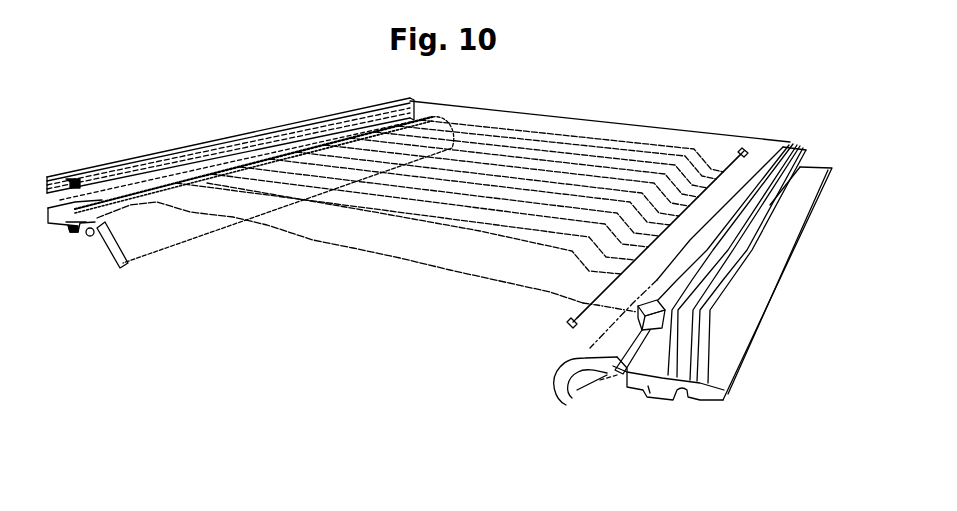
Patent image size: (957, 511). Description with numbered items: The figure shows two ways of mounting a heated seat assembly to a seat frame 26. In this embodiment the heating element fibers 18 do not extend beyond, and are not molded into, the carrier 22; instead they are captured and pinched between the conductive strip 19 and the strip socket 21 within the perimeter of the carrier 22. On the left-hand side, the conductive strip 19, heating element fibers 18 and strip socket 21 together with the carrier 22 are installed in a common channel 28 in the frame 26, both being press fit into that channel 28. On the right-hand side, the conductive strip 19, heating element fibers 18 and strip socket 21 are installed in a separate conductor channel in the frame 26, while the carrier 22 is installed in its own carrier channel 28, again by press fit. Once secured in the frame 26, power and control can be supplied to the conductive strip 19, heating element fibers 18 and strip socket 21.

The heating element fibers 18 is at (395, 227).
The conductive strip 19 is at (395, 227).
The strip socket 21 is at (47, 180).
The carrier 22 is at (138, 158).
The frame 26 is at (189, 252).
The channel 28 is at (51, 230).